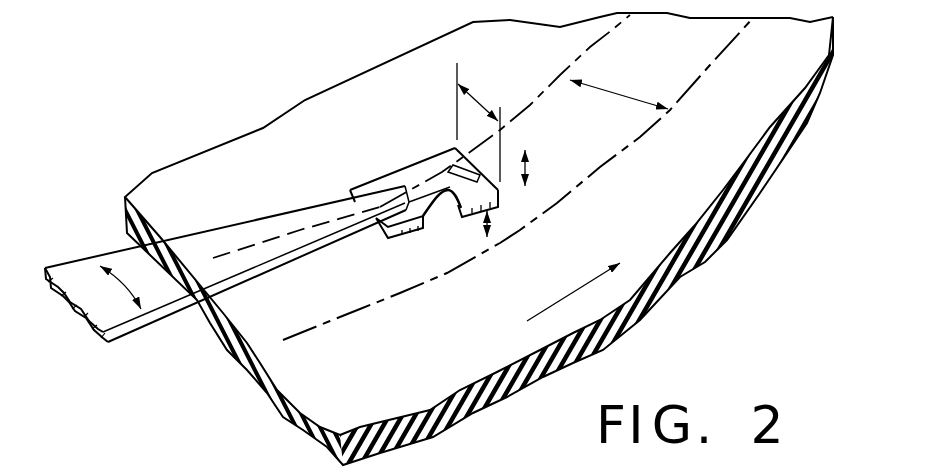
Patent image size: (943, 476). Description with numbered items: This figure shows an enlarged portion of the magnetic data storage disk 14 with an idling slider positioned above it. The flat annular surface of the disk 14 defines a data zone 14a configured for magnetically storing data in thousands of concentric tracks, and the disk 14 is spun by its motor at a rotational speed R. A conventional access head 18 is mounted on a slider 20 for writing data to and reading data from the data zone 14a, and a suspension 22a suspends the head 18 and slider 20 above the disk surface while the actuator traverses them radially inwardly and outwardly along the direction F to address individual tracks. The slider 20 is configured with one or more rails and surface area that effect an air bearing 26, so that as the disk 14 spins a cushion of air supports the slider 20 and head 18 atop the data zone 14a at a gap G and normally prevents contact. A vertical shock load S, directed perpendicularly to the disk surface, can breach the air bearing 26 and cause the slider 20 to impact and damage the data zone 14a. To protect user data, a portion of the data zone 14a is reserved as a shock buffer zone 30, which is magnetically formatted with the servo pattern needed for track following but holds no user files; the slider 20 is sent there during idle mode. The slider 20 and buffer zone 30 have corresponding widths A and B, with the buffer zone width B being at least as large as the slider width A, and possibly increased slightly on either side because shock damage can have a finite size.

The disk 14 is at (762, 178).
The data zone 14a is at (690, 194).
The shock buffer zone 30 is at (603, 137).
The suspension 22a is at (230, 226).
The access head 18 is at (455, 160).
The slider 20 is at (380, 176).
The air bearing 26 is at (410, 252).
The slider width A is at (476, 100).
The shock buffer zone width B is at (615, 93).
The shock load S is at (529, 167).
The traversing direction F is at (127, 281).
The gap G is at (487, 238).
The rotational speed R is at (548, 308).